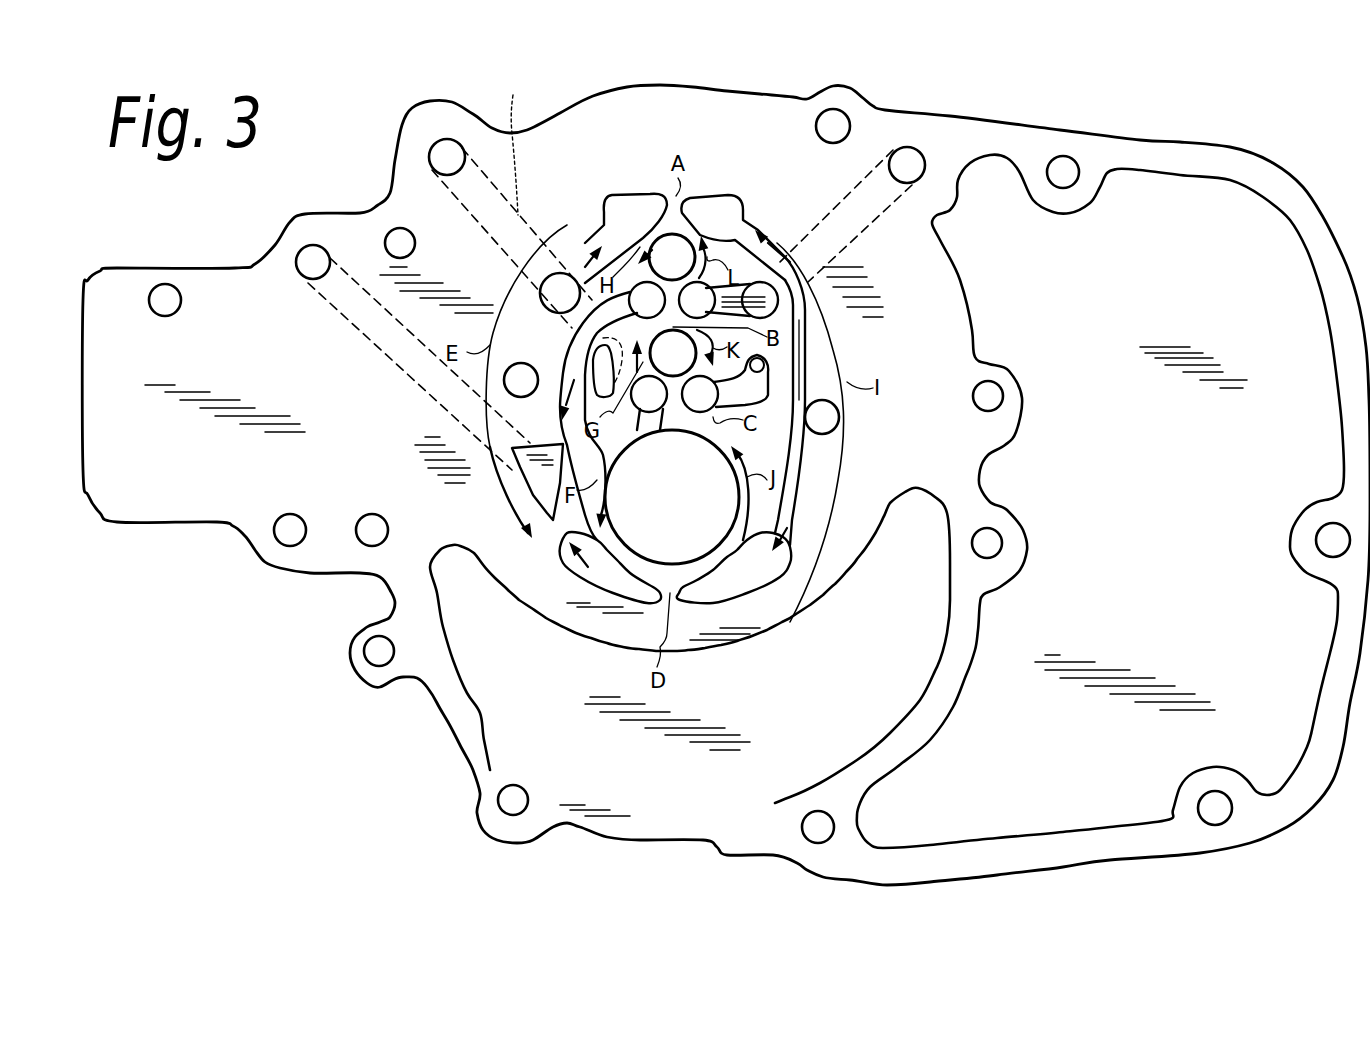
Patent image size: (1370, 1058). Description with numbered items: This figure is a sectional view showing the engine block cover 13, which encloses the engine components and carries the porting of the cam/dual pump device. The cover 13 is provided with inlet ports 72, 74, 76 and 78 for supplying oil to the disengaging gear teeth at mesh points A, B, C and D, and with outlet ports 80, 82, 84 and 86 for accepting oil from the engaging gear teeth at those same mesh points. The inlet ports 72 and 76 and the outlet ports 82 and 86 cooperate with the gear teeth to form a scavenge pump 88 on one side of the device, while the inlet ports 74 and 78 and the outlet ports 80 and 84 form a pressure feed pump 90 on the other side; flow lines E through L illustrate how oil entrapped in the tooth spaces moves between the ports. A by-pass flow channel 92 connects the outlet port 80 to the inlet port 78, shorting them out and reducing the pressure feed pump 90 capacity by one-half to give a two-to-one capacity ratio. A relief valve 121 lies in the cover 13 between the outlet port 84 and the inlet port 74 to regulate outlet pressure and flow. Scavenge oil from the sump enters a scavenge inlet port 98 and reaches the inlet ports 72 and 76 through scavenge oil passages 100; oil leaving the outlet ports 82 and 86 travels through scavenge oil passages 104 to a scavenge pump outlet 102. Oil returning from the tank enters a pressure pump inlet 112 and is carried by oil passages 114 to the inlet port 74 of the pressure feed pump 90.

The engine block cover 13 is at (150, 268).
The inlet port 72 is at (618, 229).
The inlet port 74 is at (689, 312).
The inlet port 76 is at (641, 406).
The inlet port 78 is at (748, 580).
The outlet port 80 is at (711, 227).
The outlet port 82 is at (639, 312).
The outlet port 84 is at (692, 406).
The outlet port 86 is at (593, 583).
The scavenge pump 88 is at (468, 512).
The pressure feed pump 90 is at (889, 436).
The by-pass flow channel 92 is at (806, 372).
The scavenge inlet port 98 is at (467, 160).
The scavenge oil passages 100 is at (510, 141).
The scavenge pump outlet 102 is at (313, 280).
The scavenge oil passages 104 is at (347, 320).
The pressure pump inlet 112 is at (908, 192).
The oil passages 114 is at (827, 203).
The relief valve 121 is at (764, 364).